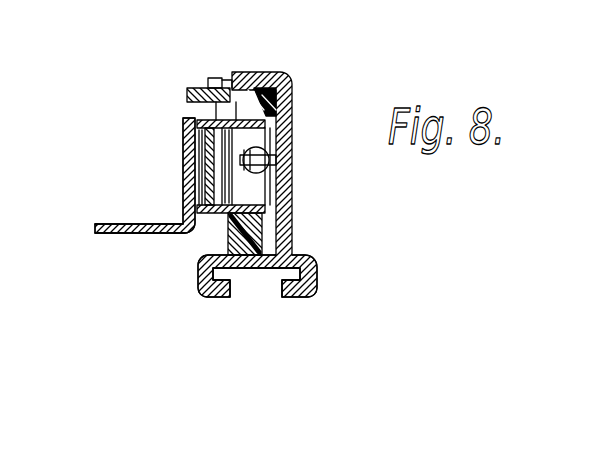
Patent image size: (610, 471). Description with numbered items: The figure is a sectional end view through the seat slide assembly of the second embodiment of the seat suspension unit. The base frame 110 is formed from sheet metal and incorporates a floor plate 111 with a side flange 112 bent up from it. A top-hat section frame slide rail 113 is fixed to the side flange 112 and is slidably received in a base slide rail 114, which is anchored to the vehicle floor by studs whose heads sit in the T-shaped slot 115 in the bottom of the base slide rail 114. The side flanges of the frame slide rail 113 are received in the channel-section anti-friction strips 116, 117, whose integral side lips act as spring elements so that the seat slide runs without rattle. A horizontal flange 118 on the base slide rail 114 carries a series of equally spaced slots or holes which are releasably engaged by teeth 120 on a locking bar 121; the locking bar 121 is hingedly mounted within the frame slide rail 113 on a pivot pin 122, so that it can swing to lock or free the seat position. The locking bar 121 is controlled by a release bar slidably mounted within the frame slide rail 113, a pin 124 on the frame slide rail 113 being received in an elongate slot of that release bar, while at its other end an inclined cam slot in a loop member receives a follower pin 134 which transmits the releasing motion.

The base frame 110 is at (106, 198).
The floor plate 111 is at (106, 239).
The side flange 112 is at (184, 125).
The frame slide rail 113 is at (196, 87).
The base slide rail 114 is at (322, 283).
The T-shaped slot 115 is at (250, 284).
The anti-friction strip 116 is at (290, 96).
The anti-friction strip 117 is at (294, 227).
The horizontal flange 118 is at (243, 76).
The teeth 120 is at (220, 77).
The locking bar 121 is at (212, 214).
The pivot pin 122 is at (184, 172).
The pin 124 is at (275, 175).
The follower pin 134 is at (275, 140).